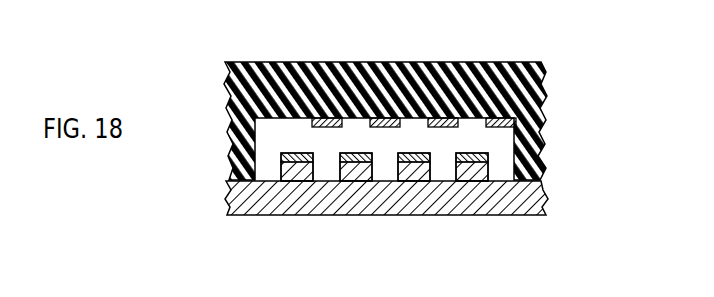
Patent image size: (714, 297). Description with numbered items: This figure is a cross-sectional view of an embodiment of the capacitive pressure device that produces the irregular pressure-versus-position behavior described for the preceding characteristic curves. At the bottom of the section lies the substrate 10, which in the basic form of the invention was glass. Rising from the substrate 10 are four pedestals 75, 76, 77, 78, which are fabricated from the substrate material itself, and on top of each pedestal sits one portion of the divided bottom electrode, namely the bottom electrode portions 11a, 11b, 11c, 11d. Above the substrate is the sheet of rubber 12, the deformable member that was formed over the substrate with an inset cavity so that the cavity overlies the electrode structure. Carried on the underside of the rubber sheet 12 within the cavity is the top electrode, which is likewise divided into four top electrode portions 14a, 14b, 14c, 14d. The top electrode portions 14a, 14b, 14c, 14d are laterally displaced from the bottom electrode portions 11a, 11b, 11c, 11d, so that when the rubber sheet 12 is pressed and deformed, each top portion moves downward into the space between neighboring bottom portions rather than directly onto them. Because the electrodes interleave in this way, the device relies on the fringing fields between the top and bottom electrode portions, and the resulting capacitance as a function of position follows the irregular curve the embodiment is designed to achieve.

The substrate 10 is at (545, 187).
The sheet of rubber 12 is at (545, 80).
The top electrode portion 14a is at (327, 62).
The top electrode portion 14b is at (386, 62).
The top electrode portion 14c is at (445, 62).
The top electrode portion 14d is at (503, 62).
The bottom electrode portion 11a is at (283, 154).
The bottom electrode portion 11b is at (342, 154).
The bottom electrode portion 11c is at (400, 154).
The bottom electrode portion 11d is at (458, 154).
The pedestal 75 is at (300, 168).
The pedestal 76 is at (359, 168).
The pedestal 77 is at (417, 168).
The pedestal 78 is at (476, 168).